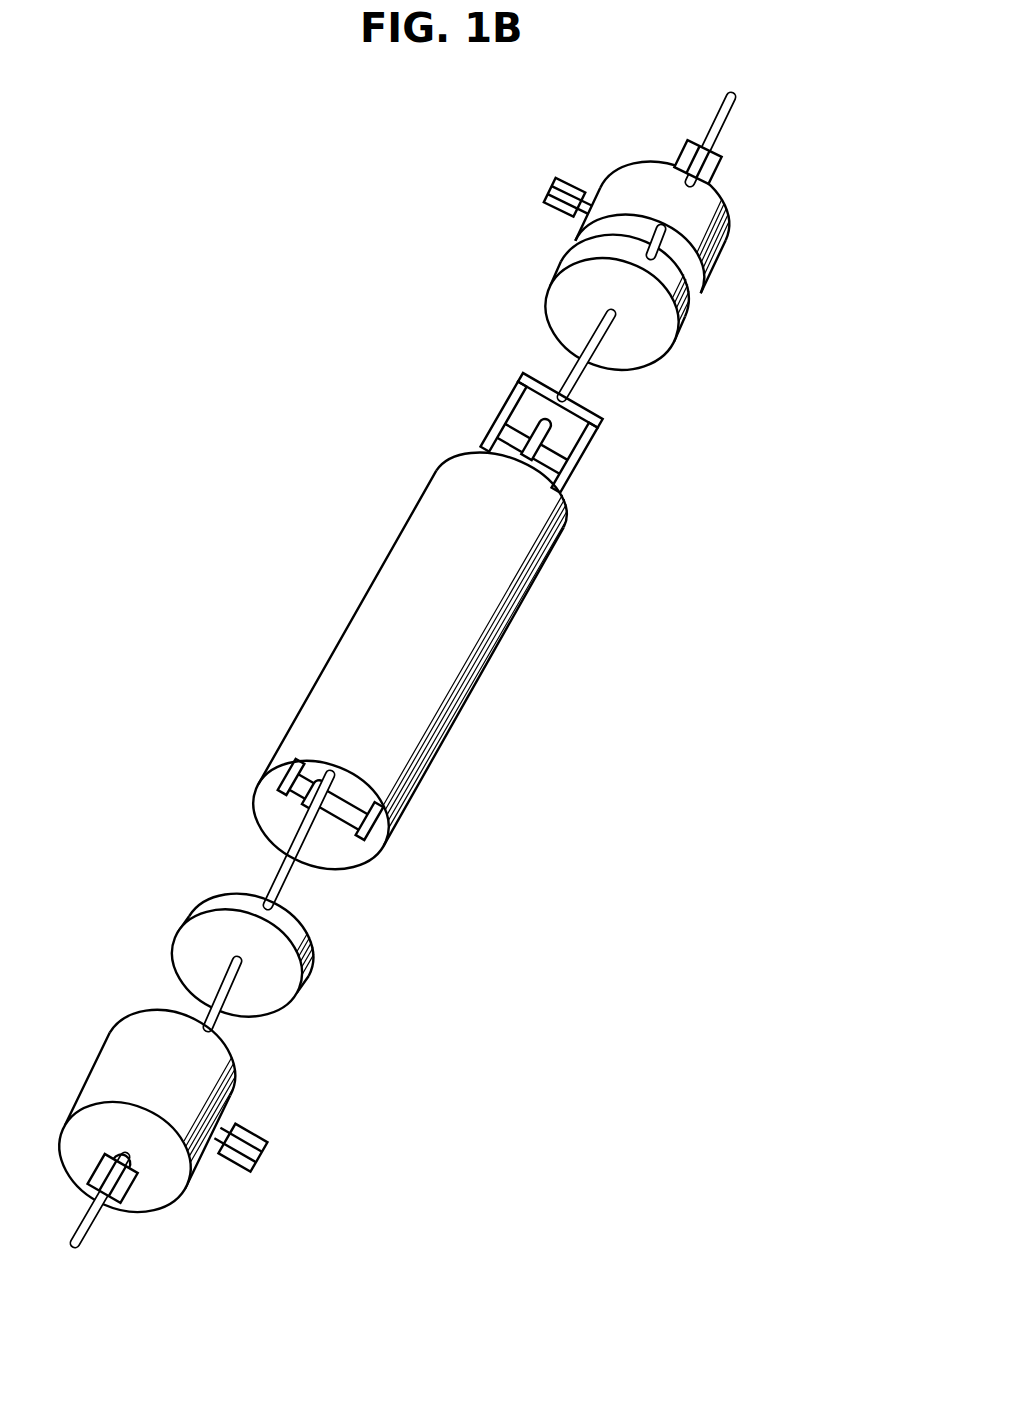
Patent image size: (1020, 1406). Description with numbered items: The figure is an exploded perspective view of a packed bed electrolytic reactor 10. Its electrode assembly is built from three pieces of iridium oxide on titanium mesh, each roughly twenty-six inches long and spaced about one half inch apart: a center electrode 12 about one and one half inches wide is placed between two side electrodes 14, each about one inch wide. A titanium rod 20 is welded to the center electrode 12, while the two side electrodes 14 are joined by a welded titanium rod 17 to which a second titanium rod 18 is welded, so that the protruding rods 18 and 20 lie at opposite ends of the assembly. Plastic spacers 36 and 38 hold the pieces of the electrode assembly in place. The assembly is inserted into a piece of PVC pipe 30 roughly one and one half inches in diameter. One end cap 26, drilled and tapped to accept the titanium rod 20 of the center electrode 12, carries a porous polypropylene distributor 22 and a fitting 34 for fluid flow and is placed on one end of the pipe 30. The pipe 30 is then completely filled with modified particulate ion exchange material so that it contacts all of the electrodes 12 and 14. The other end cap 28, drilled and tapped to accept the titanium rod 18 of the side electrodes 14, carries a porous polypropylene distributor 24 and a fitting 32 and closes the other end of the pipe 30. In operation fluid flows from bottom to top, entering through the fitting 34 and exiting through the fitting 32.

The seal assembly 10 is at (326, 600).
The center electrode 12 is at (333, 791).
The side electrodes 14 is at (512, 393).
The titanium rod 17 is at (584, 405).
The second titanium rod 18 is at (585, 372).
The titanium rod 20 is at (278, 891).
The porous polypropylene distributor 22 is at (312, 958).
The porous polypropylene distributor 24 is at (685, 312).
The end cap 26 is at (247, 1096).
The end cap 28 is at (713, 264).
The PVC pipe 30 is at (410, 665).
The fitting 32 is at (545, 200).
The fitting 34 is at (252, 1153).
The plastic spacer 36 is at (558, 462).
The plastic spacer 38 is at (516, 432).